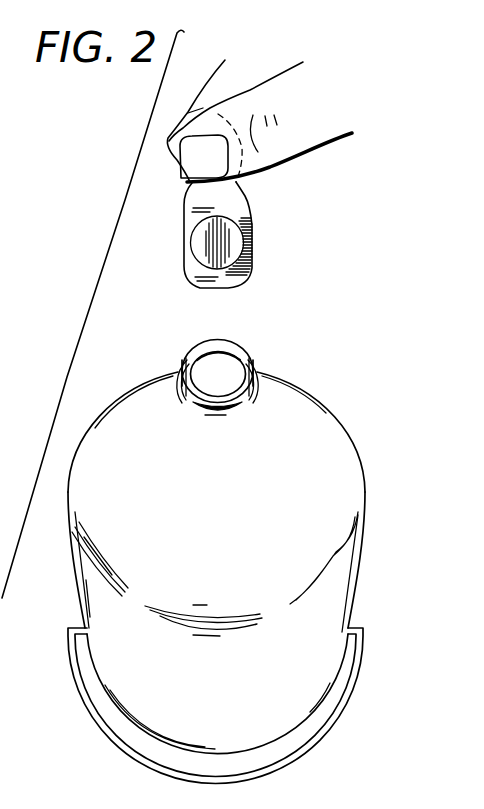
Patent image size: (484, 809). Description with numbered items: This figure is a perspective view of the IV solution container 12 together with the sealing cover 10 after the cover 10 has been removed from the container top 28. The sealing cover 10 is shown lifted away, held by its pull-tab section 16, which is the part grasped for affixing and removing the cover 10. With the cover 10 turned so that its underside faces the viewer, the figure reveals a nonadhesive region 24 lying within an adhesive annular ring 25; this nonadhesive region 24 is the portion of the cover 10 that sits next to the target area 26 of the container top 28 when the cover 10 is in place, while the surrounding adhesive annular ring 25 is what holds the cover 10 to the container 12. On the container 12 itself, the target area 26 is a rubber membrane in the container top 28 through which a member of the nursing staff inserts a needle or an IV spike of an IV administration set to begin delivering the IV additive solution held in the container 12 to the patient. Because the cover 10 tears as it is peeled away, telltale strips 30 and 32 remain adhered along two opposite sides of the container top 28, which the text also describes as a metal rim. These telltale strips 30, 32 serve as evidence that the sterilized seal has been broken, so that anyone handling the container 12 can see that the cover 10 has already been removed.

The sealing cover 10 is at (262, 190).
The IV solution container 12 is at (232, 684).
The pull-tab section 16 is at (185, 134).
The nonadhesive region 24 is at (235, 239).
The adhesive annular ring 25 is at (240, 278).
The target area 26 is at (232, 381).
The container top 28 is at (242, 405).
The telltale strip 30 is at (258, 372).
The telltale strip 32 is at (178, 373).